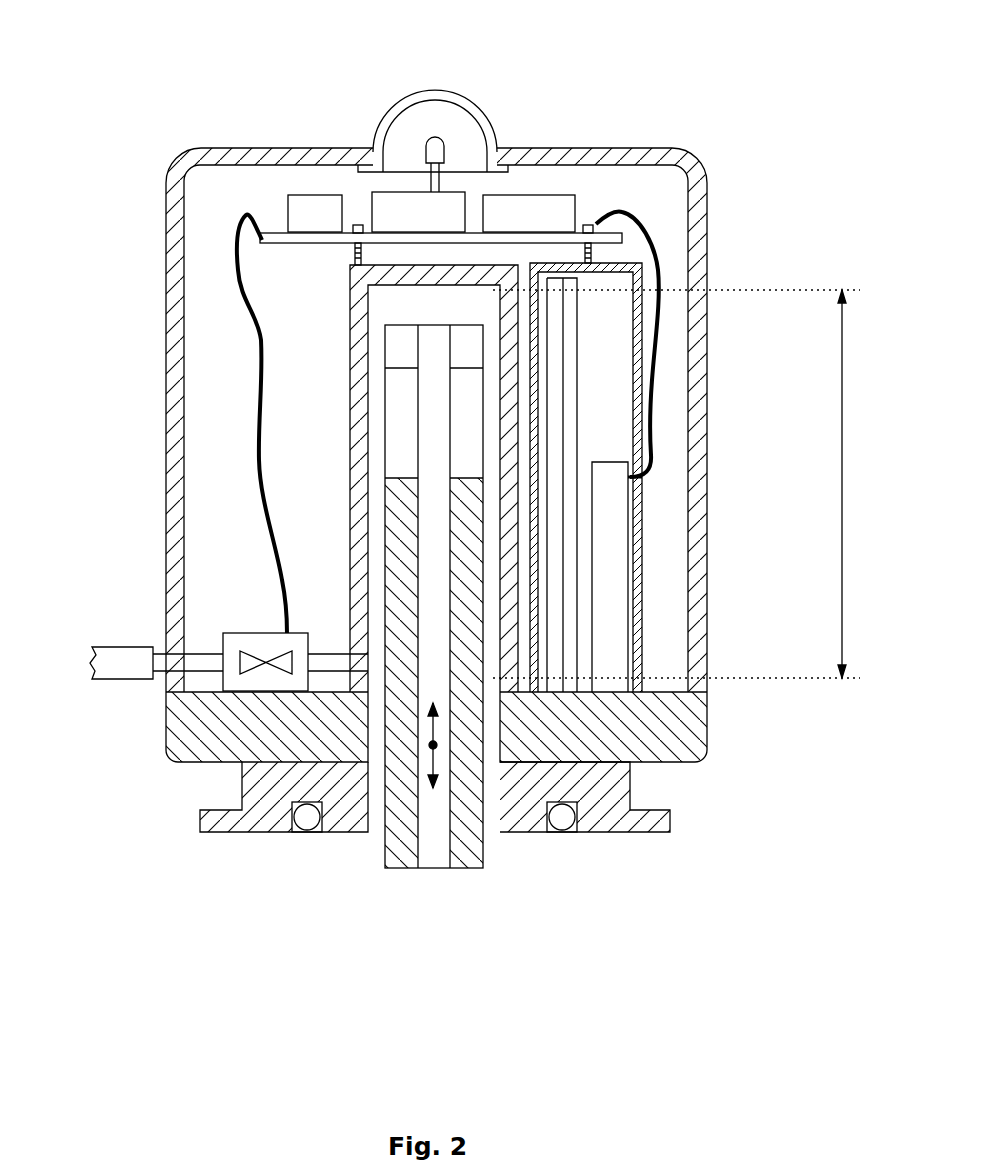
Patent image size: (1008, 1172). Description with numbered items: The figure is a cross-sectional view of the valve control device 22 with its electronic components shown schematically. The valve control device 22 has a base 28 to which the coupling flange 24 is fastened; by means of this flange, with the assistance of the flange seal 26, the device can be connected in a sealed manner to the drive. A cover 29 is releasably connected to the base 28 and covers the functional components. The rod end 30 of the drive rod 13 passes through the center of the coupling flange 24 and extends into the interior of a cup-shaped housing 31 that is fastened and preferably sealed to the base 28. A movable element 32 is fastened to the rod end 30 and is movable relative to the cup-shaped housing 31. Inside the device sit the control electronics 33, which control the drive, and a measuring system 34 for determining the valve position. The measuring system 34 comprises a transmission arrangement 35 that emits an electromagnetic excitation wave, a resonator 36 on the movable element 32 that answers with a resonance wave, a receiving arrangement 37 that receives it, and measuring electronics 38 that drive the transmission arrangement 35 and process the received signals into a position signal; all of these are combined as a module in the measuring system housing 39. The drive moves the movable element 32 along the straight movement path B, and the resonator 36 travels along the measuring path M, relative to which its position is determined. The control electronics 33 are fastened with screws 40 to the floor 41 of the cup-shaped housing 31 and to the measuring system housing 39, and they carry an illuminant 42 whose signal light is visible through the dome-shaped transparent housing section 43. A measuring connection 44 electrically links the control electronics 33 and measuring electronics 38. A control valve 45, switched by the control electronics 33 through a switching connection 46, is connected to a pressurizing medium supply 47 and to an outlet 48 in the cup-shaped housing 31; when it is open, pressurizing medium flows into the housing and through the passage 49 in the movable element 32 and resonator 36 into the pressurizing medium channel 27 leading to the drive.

The drive rod 13 is at (477, 868).
The valve control device 22 is at (184, 116).
The coupling flange 24 is at (670, 817).
The flange seal 26 is at (567, 822).
The pressurizing medium channel 27 is at (440, 870).
The base 28 is at (681, 722).
The cover 29 is at (683, 148).
The rod end 30 is at (395, 487).
The cup-shaped housing 31 is at (360, 313).
The movable element 32 is at (402, 395).
The control electronics 33 is at (282, 233).
The measuring system 34 is at (595, 412).
The transmission arrangement 35 is at (555, 620).
The resonator 36 is at (407, 352).
The receiving arrangement 37 is at (575, 580).
The measuring electronics 38 is at (615, 535).
The measuring system housing 39 is at (640, 492).
The screws 40 is at (357, 225).
The floor 41 is at (473, 268).
The illuminant 42 is at (437, 137).
The transparent housing section 43 is at (463, 102).
The measuring connection 44 is at (643, 226).
The control valve 45 is at (240, 643).
The switching connection 46 is at (280, 580).
The pressurizing medium supply 47 is at (125, 672).
The outlet 48 is at (357, 662).
The passage 49 is at (433, 440).
The movement path B is at (431, 745).
The measuring path M is at (843, 402).